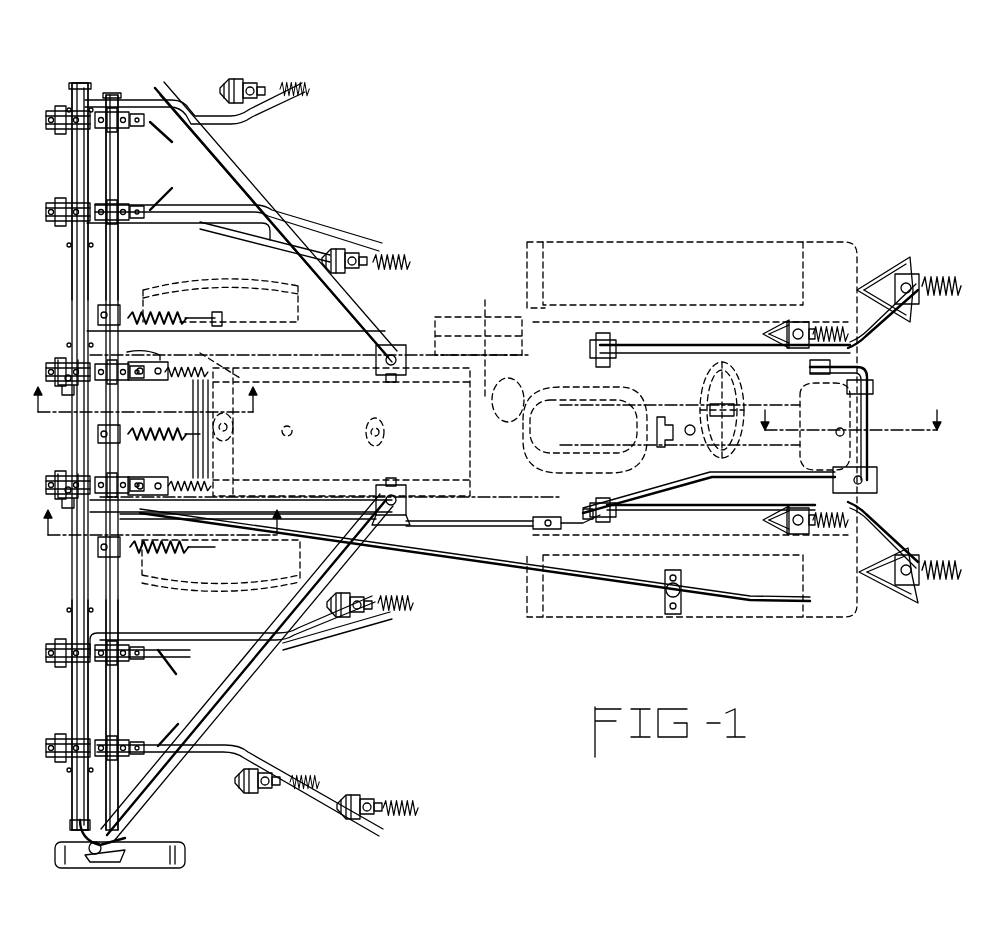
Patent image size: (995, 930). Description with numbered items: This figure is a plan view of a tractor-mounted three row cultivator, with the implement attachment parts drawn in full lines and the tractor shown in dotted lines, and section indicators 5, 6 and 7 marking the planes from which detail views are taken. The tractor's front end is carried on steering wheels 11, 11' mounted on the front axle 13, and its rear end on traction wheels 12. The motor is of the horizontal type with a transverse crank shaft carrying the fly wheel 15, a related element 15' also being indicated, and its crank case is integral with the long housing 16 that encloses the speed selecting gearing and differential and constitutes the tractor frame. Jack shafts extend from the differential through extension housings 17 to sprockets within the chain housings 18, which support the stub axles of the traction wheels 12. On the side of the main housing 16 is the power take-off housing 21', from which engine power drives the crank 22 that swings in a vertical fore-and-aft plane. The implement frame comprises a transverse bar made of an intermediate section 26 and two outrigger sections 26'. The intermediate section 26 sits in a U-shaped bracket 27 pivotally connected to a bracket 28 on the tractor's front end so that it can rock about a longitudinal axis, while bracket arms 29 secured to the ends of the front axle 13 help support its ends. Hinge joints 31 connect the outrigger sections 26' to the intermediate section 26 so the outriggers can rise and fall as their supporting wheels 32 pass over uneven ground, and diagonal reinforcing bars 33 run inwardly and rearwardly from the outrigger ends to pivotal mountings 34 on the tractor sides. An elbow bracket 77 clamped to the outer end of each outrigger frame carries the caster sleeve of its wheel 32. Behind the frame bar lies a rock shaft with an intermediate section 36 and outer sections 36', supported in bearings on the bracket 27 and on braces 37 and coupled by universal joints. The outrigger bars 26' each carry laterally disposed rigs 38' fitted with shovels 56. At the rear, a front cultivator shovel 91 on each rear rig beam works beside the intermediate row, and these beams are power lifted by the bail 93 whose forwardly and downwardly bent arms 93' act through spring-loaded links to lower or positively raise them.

The section line 5- 5 is at (160, 522).
The section line 6- 6 is at (850, 411).
The section line 7- 7 is at (143, 399).
The steering wheels 11 is at (220, 287).
The front wheel 11' is at (217, 577).
The traction wheels 12 is at (527, 255).
The front axle 13 is at (250, 346).
The fly wheel 15 is at (465, 561).
The lift rod 15' is at (469, 536).
The housing 16 is at (478, 347).
The extension housings 17 is at (640, 372).
The chain housings 18 is at (660, 340).
The housing of the take-off device 21' is at (527, 535).
The crank 22 is at (572, 527).
The intermediate section 26 is at (61, 456).
The lateral outrigger sections 26' is at (55, 456).
The U-shaped bracket 27 is at (205, 466).
The bracket 28 is at (200, 457).
The bracket arms 29 is at (157, 358).
The hinge joints 31 is at (58, 372).
The supporting wheels 32 is at (186, 852).
The diagonal reinforcing bars 33 is at (230, 720).
The pivotal mounting 34 is at (406, 488).
The intermediate section of rock shaft 36 is at (129, 462).
The outwardly extending rock shaft sections 36' is at (128, 461).
The braces 37 is at (240, 224).
The laterally disposed rigs 38' is at (296, 507).
The shovels 56 is at (352, 598).
The elbow bracket 77 is at (75, 836).
The front cultivator shovel 91 is at (900, 592).
The rock shaft or bail 93 is at (862, 426).
The bail arms 93' is at (889, 430).